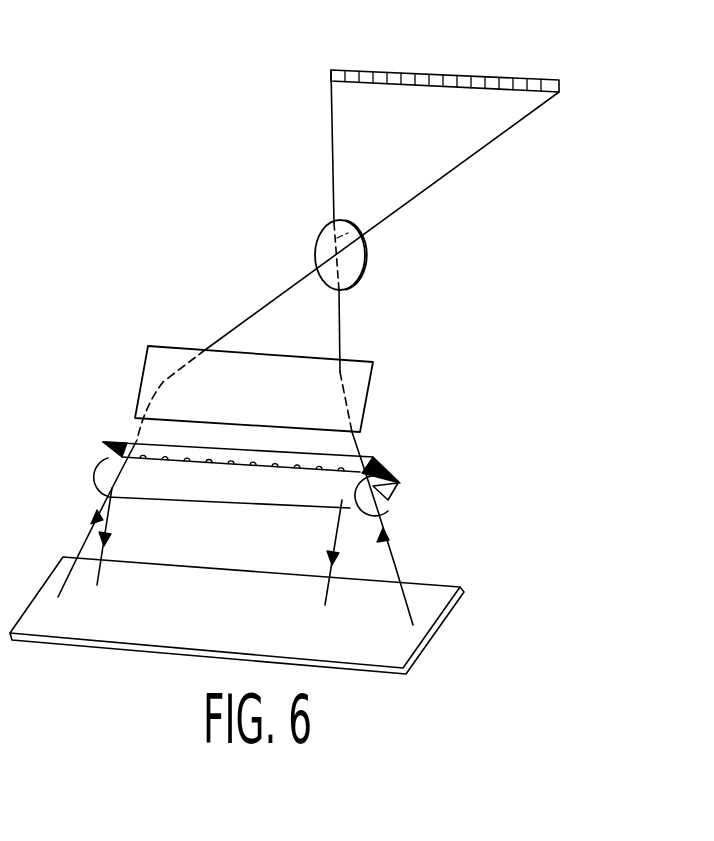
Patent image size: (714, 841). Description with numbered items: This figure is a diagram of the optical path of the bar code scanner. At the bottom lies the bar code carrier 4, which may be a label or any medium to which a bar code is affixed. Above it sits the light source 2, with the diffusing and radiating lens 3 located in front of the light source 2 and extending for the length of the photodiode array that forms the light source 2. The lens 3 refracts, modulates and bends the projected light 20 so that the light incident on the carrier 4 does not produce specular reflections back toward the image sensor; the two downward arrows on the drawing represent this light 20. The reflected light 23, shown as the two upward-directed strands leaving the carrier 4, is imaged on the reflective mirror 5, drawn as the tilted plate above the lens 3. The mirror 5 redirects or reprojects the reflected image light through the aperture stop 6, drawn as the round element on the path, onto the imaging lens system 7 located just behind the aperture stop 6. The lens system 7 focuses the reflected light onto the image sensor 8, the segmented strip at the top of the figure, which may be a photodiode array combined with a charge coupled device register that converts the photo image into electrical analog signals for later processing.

The light source 2 is at (380, 463).
The diffusing and radiating lens 3 is at (103, 462).
The bar code carrier 4 is at (422, 650).
The reflective mirror 5 is at (367, 387).
The aperture stop 6 is at (318, 245).
The imaging lens system 7 is at (372, 250).
The image sensor 8 is at (552, 80).
The light 20 is at (113, 523).
The reflected light 23 is at (88, 533).